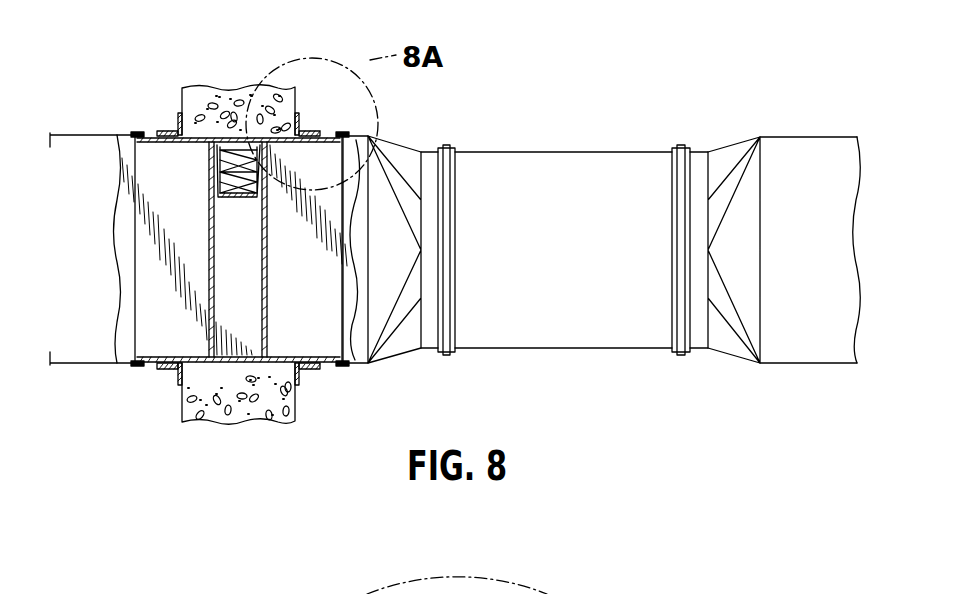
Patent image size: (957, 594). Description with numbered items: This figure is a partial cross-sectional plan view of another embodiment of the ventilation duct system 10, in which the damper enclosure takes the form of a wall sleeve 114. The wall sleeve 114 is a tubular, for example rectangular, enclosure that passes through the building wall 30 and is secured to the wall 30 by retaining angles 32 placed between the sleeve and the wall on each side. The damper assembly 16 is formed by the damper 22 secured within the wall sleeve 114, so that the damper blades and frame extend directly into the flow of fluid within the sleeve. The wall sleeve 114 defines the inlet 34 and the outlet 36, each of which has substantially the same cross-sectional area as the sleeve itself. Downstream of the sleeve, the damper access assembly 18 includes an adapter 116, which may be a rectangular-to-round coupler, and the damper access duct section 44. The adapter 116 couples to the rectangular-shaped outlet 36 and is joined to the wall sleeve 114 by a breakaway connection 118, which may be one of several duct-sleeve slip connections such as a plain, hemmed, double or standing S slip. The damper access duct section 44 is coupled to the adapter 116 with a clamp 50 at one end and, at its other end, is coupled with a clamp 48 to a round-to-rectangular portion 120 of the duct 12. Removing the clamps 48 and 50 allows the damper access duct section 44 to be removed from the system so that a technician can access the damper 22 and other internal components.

The ventilation duct system 10 is at (672, 72).
The ventilation duct run 12 is at (803, 138).
The damper assembly 16 is at (153, 134).
The damper access assembly 18 is at (603, 147).
The damper 22 is at (208, 199).
The wall 30 is at (238, 93).
The retaining angle 32 is at (180, 122).
The inlet 34 is at (135, 258).
The outlet 36 is at (343, 348).
The damper access duct section 44 is at (545, 151).
The clamp 48 is at (681, 146).
The clamp 50 is at (447, 146).
The wall sleeve 114 is at (325, 368).
The adapter 116 is at (393, 140).
The breakaway connection 118 is at (341, 132).
The round-to-rectangular portion 120 is at (738, 140).